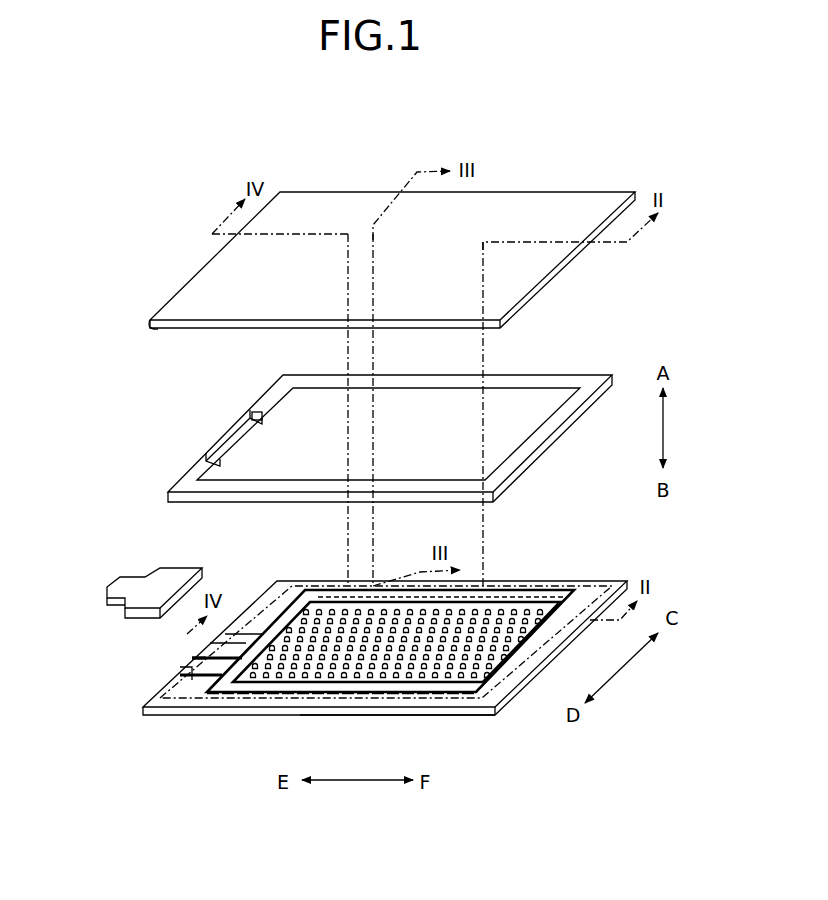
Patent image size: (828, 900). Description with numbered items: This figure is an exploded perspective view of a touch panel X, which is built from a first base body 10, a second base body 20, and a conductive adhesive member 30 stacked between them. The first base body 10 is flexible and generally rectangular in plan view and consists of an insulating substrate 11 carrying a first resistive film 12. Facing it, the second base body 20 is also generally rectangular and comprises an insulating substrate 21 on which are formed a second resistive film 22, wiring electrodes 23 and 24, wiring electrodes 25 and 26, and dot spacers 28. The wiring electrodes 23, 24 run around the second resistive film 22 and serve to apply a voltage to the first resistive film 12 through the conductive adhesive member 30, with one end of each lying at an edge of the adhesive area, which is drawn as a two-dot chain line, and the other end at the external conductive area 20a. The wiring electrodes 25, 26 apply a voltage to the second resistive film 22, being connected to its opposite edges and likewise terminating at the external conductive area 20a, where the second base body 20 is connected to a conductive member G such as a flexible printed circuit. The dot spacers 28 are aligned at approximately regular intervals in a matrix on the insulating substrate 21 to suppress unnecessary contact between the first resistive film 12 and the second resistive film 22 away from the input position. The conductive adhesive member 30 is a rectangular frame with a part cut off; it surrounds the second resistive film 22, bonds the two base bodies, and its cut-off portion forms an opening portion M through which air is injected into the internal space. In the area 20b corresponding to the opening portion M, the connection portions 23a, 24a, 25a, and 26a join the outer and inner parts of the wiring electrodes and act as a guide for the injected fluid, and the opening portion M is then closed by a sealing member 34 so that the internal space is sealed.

The touch panel X is at (500, 157).
The first base body 10 is at (364, 230).
The insulating substrate 11 is at (212, 268).
The first resistive film 12 is at (152, 326).
The second base body 20 is at (368, 641).
The external conductive area 20a is at (176, 675).
The area corresponding to the opening portion 20b is at (165, 715).
The insulating substrate 21 is at (277, 581).
The second resistive film 22 is at (473, 713).
The wiring electrode 23 is at (512, 586).
The connection portion 23a is at (233, 634).
The wiring electrode 24 is at (336, 700).
The connection portion 24a is at (197, 677).
The wiring electrode 25 is at (245, 663).
The connection portion 25a is at (192, 659).
The wiring electrode 26 is at (472, 592).
The connection portion 26a is at (212, 643).
The dot spacer 28 is at (338, 609).
The conductive adhesive member 30 is at (386, 519).
The sealing member 34 is at (242, 427).
The opening portion M is at (263, 420).
The conductive member G is at (150, 572).